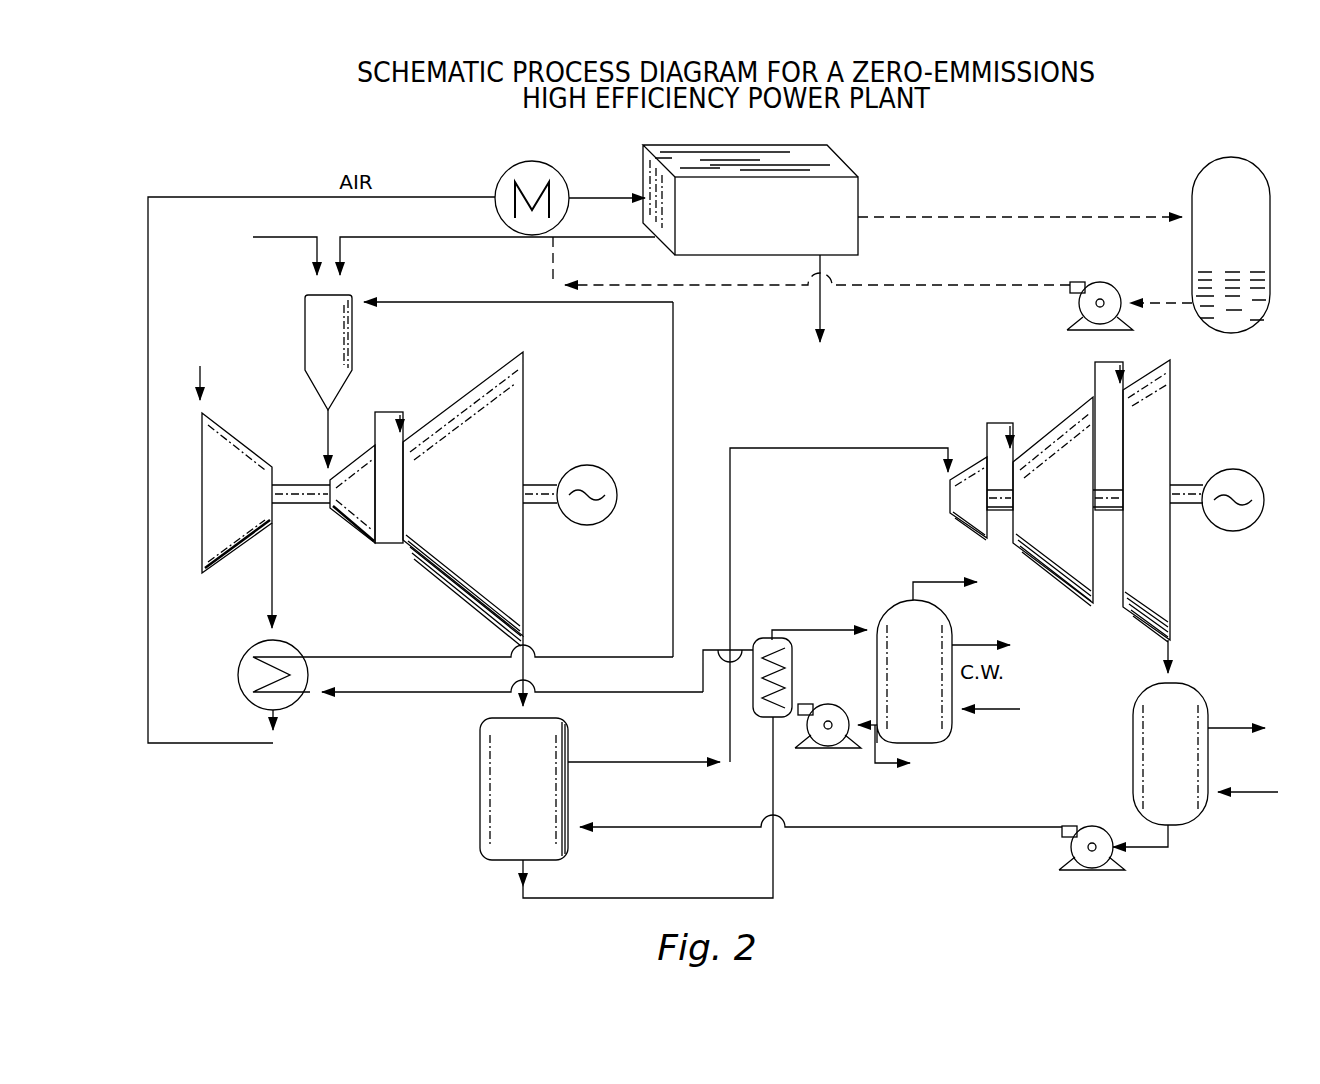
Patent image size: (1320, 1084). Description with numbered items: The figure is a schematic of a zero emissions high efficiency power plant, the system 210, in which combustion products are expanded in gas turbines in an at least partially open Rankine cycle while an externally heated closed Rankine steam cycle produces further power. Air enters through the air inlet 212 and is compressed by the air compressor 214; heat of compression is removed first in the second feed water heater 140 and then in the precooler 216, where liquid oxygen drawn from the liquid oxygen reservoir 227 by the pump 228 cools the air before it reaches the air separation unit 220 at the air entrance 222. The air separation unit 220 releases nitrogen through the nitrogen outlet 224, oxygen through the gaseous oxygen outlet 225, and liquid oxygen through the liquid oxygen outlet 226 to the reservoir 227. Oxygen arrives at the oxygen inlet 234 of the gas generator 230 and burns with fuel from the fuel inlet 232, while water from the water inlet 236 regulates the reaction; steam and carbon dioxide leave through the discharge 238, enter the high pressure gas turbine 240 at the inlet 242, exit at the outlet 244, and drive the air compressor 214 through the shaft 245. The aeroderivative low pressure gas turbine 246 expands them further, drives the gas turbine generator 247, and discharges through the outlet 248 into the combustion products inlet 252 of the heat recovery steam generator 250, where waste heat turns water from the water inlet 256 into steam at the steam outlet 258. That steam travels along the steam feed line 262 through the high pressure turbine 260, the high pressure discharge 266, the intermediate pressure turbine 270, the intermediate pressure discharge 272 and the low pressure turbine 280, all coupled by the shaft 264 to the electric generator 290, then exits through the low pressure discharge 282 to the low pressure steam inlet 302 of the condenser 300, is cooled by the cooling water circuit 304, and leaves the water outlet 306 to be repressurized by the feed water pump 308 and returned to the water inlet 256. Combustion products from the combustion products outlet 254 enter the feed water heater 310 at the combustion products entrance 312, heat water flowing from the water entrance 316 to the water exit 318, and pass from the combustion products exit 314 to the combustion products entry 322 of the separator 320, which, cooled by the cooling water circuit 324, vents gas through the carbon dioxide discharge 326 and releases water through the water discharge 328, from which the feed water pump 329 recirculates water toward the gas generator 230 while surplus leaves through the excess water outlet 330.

The second feed water heater 140 is at (240, 680).
The system 210 is at (240, 788).
The air inlet 212 is at (203, 374).
The air compressor 214 is at (205, 560).
The precooler 216 is at (508, 172).
The air separation unit 220 is at (852, 165).
The air entrance 222 is at (625, 194).
The nitrogen outlet 224 is at (818, 300).
The gaseous oxygen outlet 225 is at (588, 238).
The liquid oxygen outlet 226 is at (890, 219).
The liquid oxygen reservoir 227 is at (1192, 175).
The pump 228 is at (1108, 282).
The gas generator 230 is at (305, 326).
The fuel inlet 232 is at (317, 258).
The oxygen inlet 234 is at (340, 252).
The water inlet 236 is at (354, 306).
The discharge 238 is at (328, 423).
The high pressure gas turbine 240 is at (358, 538).
The inlet 242 is at (327, 472).
The outlet 244 is at (392, 412).
The shaft 245 is at (300, 505).
The low pressure gas turbine 246 is at (460, 588).
The gas turbine generator 247 is at (587, 525).
The outlet 248 is at (528, 662).
The heat recovery steam generator 250 is at (480, 812).
The combustion products inlet 252 is at (512, 717).
The combustion products outlet 254 is at (516, 861).
The water inlet 256 is at (570, 822).
The steam outlet 258 is at (570, 758).
The high pressure turbine 260 is at (977, 462).
The steam feed line 262 is at (878, 450).
The shaft 264 is at (1000, 512).
The high pressure discharge 266 is at (1000, 423).
The intermediate pressure turbine 270 is at (1072, 410).
The intermediate pressure discharge 272 is at (1110, 362).
The low pressure turbine 280 is at (1147, 625).
The low pressure discharge 282 is at (1174, 657).
The electric generator 290 is at (1233, 469).
The condenser 300 is at (1133, 717).
The low pressure steam inlet 302 is at (1183, 682).
The cooling water circuit 304 is at (1230, 724).
The water outlet 306 is at (1173, 830).
The feed water pump 308 is at (1080, 873).
The feed water heater 310 is at (794, 677).
The combustion products entrance 312 is at (771, 766).
The combustion products exit 314 is at (793, 640).
The water entrance 316 is at (795, 750).
The water exit 318 is at (755, 638).
The separator 320 is at (887, 620).
The combustion products entry 322 is at (875, 621).
The cooling water circuit 324 is at (1003, 712).
The carbon dioxide discharge 326 is at (937, 580).
The water discharge 328 is at (875, 720).
The feed water pump 329 is at (847, 752).
The excess water outlet 330 is at (880, 767).